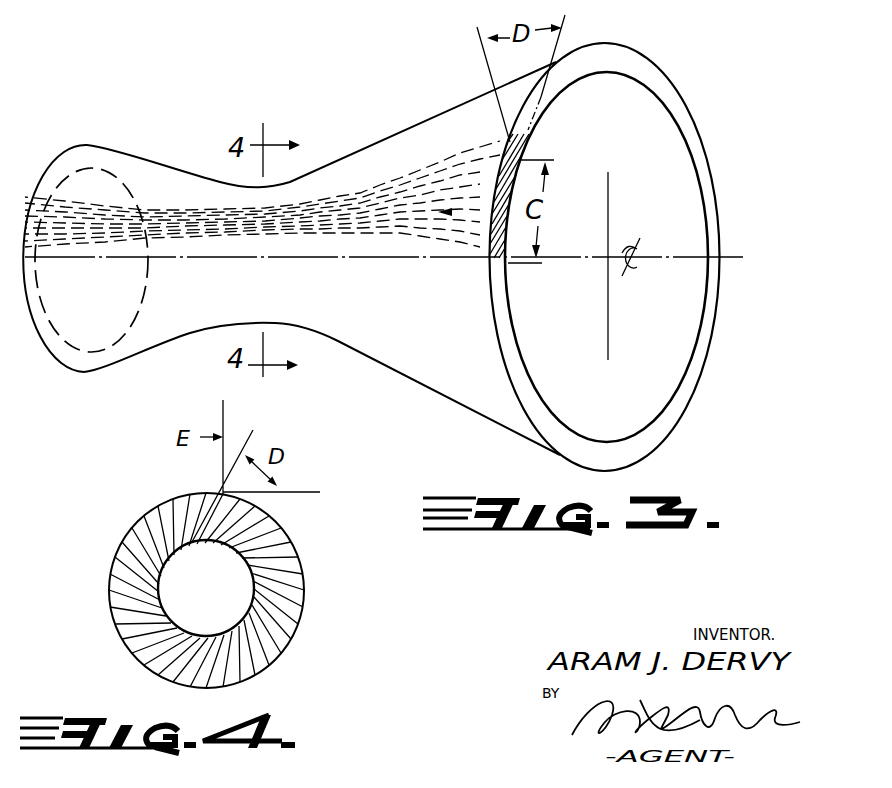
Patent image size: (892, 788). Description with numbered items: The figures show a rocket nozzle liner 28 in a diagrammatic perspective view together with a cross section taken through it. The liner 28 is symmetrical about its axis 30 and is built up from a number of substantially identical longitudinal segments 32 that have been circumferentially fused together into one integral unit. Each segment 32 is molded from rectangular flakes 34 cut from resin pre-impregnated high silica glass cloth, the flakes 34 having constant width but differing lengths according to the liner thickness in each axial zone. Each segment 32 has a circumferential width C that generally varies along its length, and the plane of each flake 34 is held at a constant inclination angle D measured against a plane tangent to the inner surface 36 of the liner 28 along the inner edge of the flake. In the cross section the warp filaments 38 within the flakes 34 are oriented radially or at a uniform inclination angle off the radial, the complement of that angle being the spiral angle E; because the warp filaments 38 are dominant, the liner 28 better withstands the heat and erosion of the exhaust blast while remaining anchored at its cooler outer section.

In FIG. 3, the rocket nozzle liner 28 is at (690, 117).
In FIG. 4, the rocket nozzle liner 28 is at (137, 528).
In FIG. 3, the axis 30 is at (733, 257).
In FIG. 3, the longitudinal segments 32 is at (202, 218).
In FIG. 3, the rectangular flakes 34 is at (447, 177).
In FIG. 3, the inner surface 36 is at (668, 388).
In FIG. 4, the inner surface 36 is at (190, 546).
In FIG. 4, the warp filaments 38 is at (267, 638).